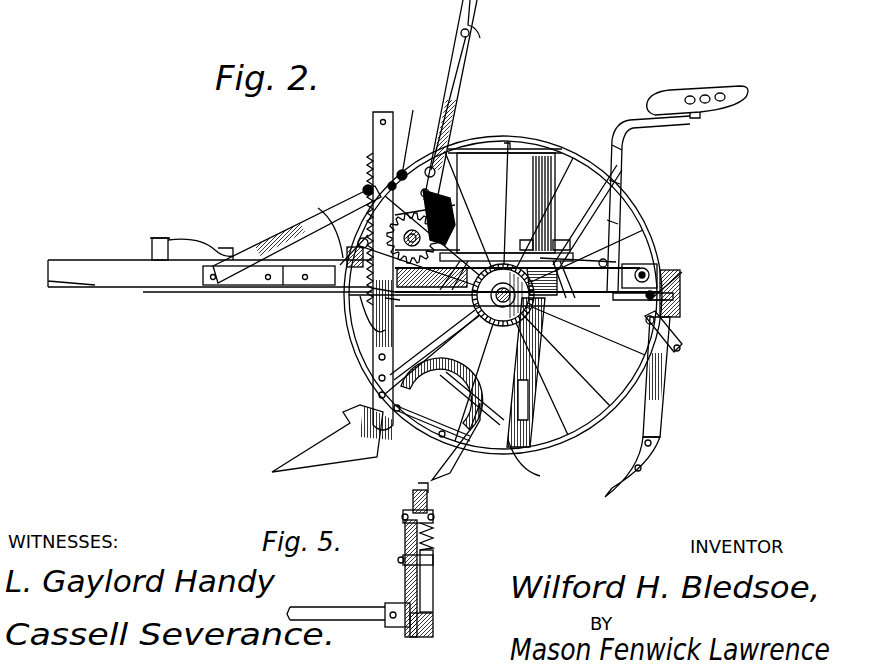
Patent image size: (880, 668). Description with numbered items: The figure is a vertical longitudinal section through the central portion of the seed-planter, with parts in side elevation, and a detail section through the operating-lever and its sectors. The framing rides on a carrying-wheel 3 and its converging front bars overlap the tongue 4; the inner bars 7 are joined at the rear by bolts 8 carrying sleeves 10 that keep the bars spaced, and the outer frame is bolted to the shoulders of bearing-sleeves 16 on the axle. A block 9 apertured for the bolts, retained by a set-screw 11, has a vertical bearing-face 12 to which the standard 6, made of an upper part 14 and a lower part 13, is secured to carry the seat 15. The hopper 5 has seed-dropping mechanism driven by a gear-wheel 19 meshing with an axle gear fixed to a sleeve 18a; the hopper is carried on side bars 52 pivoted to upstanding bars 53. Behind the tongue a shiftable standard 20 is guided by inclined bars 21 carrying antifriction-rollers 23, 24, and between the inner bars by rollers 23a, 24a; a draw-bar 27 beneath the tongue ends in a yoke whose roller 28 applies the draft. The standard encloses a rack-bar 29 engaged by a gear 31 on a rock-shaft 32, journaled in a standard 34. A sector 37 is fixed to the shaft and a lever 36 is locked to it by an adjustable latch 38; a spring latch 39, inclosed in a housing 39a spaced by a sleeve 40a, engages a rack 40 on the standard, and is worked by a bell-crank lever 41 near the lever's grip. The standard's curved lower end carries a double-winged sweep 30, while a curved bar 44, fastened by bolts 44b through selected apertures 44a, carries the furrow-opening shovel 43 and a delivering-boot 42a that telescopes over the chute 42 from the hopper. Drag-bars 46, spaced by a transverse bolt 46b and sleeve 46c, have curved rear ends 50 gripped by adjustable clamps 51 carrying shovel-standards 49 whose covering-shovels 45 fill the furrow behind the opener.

In FIG. 2, the carrying-wheel 3 is at (513, 141).
In FIG. 2, the tongue 4 is at (105, 270).
In FIG. 2, the seed-hopper 5 is at (507, 220).
In FIG. 2, the standard 6 is at (602, 260).
In FIG. 2, the inner bar 7 is at (348, 258).
In FIG. 2, the bolt 8 is at (665, 281).
In FIG. 2, the block 9 is at (649, 268).
In FIG. 2, the sleeve 10 is at (625, 297).
In FIG. 2, the set-screw 11 is at (658, 267).
In FIG. 2, the vertical bearing-face 12 is at (608, 244).
In FIG. 2, the lower part of standard 13 is at (613, 222).
In FIG. 2, the upper part of standard 14 is at (640, 132).
In FIG. 2, the seat 15 is at (742, 100).
In FIG. 2, the bearing-sleeve 16 is at (470, 372).
In FIG. 2, the sleeve 18a is at (442, 386).
In FIG. 2, the gear-wheel 19 is at (512, 262).
In FIG. 2, the standard 20 is at (380, 133).
In FIG. 2, the inclined bar 21 is at (297, 235).
In FIG. 2, the antifriction-roller 23 is at (364, 191).
In FIG. 2, the antifriction-roller 23a is at (373, 292).
In FIG. 2, the antifriction-roller 24 is at (413, 130).
In FIG. 2, the antifriction-roller 24a is at (388, 306).
In FIG. 2, the draw-bar 27 is at (393, 298).
In FIG. 2, the antifriction-roller 28 is at (450, 298).
In FIG. 2, the rack-bar 29 is at (385, 177).
In FIG. 2, the double-winged sweep 30 is at (355, 442).
In FIG. 2, the gear 31 is at (452, 204).
In FIG. 2, the rock-shaft 32 is at (445, 242).
In FIG. 5, the rock-shaft 32 is at (345, 615).
In FIG. 5, the standard 34 is at (434, 590).
In FIG. 2, the lever 36 is at (452, 66).
In FIG. 5, the lever 36 is at (412, 500).
In FIG. 2, the sector 37 is at (448, 222).
In FIG. 5, the sector 37 is at (404, 585).
In FIG. 2, the adjustable latch 38 is at (440, 162).
In FIG. 5, the adjustable latch 38 is at (404, 528).
In FIG. 5, the latch 39 is at (430, 512).
In FIG. 5, the housing 39a is at (434, 530).
In FIG. 2, the rack 40 is at (448, 196).
In FIG. 5, the rack 40 is at (436, 561).
In FIG. 5, the spacing-sleeve 40a is at (433, 521).
In FIG. 2, the bell-crank lever 41 is at (470, 34).
In FIG. 2, the chute 42 is at (545, 340).
In FIG. 2, the delivering-boot 42a is at (534, 467).
In FIG. 2, the furrow-opening shovel 43 is at (452, 472).
In FIG. 2, the curved bar 44 is at (440, 442).
In FIG. 2, the aperture 44a is at (377, 358).
In FIG. 2, the bolt 44b is at (377, 396).
In FIG. 2, the covering-shovel 45 is at (628, 462).
In FIG. 2, the drag-bar 46 is at (680, 294).
In FIG. 2, the transverse bolt 46b is at (680, 304).
In FIG. 2, the sleeve 46c is at (680, 314).
In FIG. 2, the shovel-standard 49 is at (661, 397).
In FIG. 2, the curved rear end 50 is at (656, 320).
In FIG. 2, the adjustable clamp 51 is at (682, 348).
In FIG. 2, the side bar 52 is at (445, 333).
In FIG. 2, the upstanding bar 53 is at (318, 208).